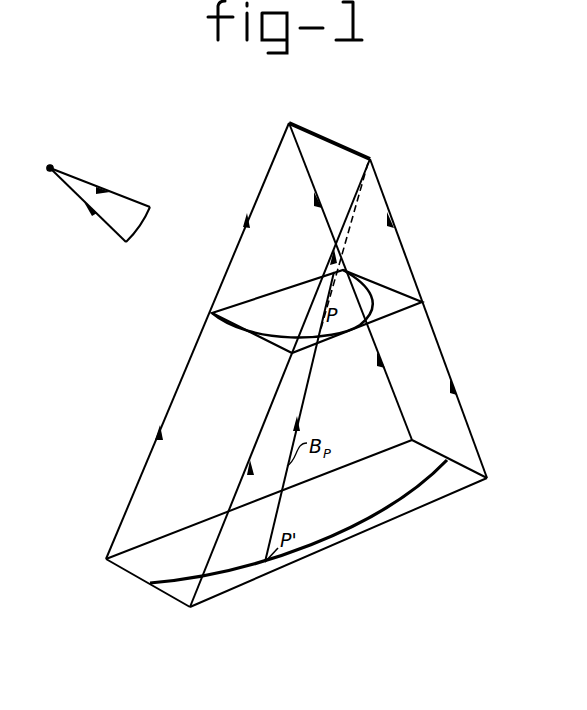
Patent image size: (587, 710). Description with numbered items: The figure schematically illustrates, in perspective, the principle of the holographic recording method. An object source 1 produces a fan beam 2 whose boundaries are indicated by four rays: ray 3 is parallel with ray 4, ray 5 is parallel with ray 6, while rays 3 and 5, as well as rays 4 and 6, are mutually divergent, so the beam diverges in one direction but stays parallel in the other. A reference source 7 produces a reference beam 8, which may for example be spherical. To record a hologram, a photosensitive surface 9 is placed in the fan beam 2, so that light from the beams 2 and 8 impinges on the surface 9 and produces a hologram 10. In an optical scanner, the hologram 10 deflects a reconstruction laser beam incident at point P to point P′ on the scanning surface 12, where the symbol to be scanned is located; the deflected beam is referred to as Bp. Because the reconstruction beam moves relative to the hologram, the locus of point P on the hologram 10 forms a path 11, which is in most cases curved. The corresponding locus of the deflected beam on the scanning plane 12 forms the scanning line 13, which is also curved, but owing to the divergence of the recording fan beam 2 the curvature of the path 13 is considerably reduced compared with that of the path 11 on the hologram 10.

The object source 1 is at (342, 142).
The fan beam 2 is at (228, 243).
The ray 3 is at (467, 420).
The ray 4 is at (397, 405).
The ray 5 is at (262, 428).
The ray 6 is at (173, 398).
The reference source 7 is at (50, 166).
The reference beam 8 is at (88, 211).
The photosensitive surface 9 is at (353, 309).
The hologram 10 is at (406, 303).
The path 11 is at (376, 286).
The scanning surface 12 is at (471, 480).
The scanning line 13 is at (436, 488).